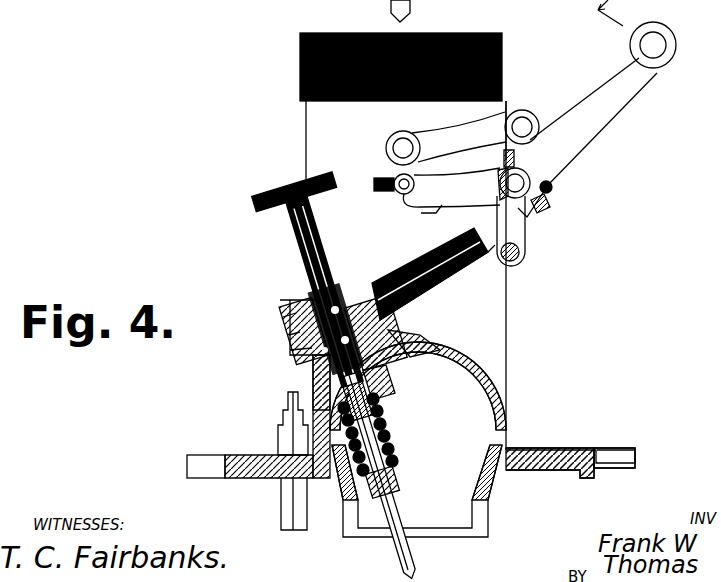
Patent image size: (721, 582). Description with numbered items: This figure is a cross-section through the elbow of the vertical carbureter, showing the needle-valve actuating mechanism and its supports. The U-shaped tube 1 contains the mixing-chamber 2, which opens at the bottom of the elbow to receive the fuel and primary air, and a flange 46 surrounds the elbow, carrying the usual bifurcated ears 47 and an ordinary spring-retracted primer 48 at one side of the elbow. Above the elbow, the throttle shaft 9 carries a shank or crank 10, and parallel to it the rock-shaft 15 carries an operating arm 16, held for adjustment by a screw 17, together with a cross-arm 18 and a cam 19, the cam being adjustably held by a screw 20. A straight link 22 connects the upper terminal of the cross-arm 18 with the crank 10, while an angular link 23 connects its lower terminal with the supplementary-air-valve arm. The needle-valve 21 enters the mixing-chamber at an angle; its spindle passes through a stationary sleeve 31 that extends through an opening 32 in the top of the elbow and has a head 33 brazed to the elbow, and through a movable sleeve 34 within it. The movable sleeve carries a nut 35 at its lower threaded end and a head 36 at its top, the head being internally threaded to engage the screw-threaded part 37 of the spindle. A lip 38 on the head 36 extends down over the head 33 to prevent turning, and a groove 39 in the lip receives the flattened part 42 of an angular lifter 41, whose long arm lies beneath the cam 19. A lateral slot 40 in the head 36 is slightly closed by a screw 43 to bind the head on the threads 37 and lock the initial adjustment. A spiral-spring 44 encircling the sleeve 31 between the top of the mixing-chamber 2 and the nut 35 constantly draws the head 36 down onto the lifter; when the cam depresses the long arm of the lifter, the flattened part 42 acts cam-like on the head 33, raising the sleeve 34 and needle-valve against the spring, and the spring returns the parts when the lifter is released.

The tube 1 is at (497, 357).
The mixing-chamber 2 is at (418, 439).
The throttle shaft 9 is at (374, 185).
The shank 10 is at (389, 165).
The rock-shaft 15 is at (534, 212).
The operating arm 16 is at (617, 98).
The screw 17 is at (552, 198).
The cross-arm 18 is at (556, 157).
The cam 19 is at (435, 200).
The screw 20 is at (553, 185).
The needle-valve 21 is at (292, 237).
The straight link 22 is at (506, 106).
The angular link 23 is at (525, 258).
The stationary sleeve 31 is at (374, 401).
The opening 32 is at (418, 340).
The head 33 is at (382, 330).
The movable sleeve 34 is at (404, 447).
The nut 35 is at (412, 479).
The head 36 is at (290, 309).
The screw-threaded part 37 is at (307, 298).
The lip 38 is at (313, 362).
The groove 39 is at (290, 332).
The slot 40 is at (369, 288).
The lifter 41 is at (420, 262).
The flattened part 42 is at (297, 353).
The screw 43 is at (355, 290).
The spiral-spring 44 is at (398, 434).
The flange 46 is at (547, 449).
The bifurcated ears 47 is at (206, 462).
The primer 48 is at (289, 403).